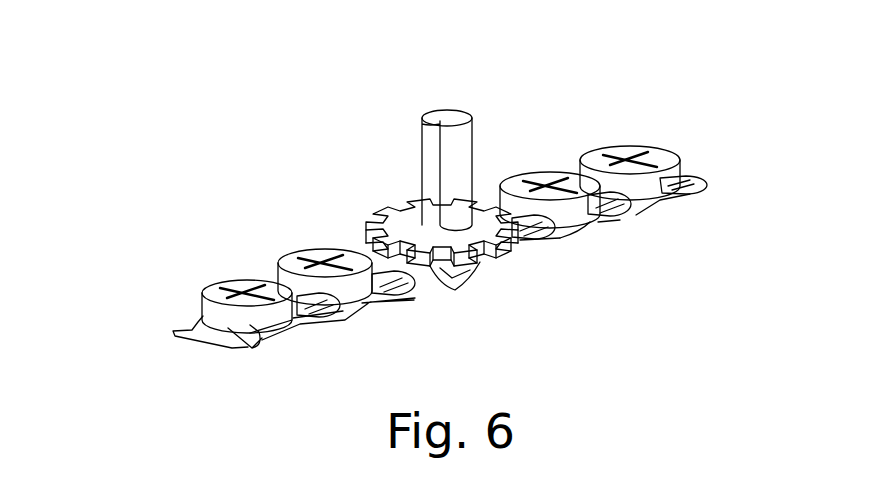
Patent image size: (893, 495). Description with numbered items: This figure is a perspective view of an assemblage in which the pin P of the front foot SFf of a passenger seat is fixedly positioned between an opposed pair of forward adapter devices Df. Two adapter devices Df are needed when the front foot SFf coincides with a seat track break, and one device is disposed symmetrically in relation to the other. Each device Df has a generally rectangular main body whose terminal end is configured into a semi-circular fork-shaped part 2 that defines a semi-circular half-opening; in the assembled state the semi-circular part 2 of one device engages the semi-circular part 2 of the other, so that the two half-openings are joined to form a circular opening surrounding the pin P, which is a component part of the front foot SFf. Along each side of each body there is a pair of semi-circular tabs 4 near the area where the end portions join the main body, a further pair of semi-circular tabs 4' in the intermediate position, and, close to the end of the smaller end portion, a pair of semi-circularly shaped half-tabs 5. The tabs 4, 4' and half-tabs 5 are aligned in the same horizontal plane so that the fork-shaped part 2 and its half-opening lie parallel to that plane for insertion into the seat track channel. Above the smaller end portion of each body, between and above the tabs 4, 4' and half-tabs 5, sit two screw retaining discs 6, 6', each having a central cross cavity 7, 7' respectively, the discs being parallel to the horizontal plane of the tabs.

The semi-circular fork-shaped part 2 is at (462, 252).
The semi-circular tabs 4 is at (486, 291).
The semi-circular tabs 4' is at (499, 288).
The half-tabs 5 is at (175, 333).
The screw retaining disc 6 is at (414, 198).
The screw retaining disc 6' is at (406, 199).
The central cross cavity 7 is at (433, 196).
The central cross cavity 7' is at (466, 201).
The pin P is at (463, 137).
The front foot SFf is at (367, 165).
The forward adapter device Df is at (718, 237).